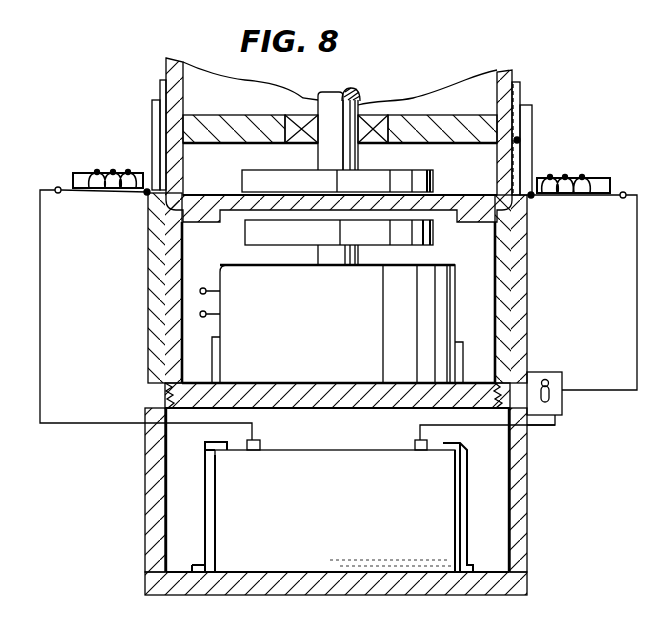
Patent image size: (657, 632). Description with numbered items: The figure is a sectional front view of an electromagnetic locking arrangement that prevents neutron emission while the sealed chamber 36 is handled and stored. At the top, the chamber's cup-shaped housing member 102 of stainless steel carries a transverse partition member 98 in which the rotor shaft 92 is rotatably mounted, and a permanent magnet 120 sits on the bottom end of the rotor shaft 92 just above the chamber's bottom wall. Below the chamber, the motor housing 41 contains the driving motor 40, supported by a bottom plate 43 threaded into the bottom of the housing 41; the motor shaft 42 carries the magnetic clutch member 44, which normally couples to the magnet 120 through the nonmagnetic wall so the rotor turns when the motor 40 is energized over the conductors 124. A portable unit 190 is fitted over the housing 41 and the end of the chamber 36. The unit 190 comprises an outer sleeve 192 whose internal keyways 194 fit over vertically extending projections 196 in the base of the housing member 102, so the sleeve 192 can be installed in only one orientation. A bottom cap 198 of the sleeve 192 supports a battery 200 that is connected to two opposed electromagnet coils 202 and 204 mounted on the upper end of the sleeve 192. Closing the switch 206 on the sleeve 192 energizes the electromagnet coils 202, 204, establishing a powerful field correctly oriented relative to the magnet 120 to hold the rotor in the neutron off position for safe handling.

The sealed chamber 36 is at (512, 72).
The rotor shaft 92 is at (355, 110).
The transverse partition member 98 is at (427, 117).
The permanent magnet 120 is at (425, 181).
The magnetic clutch member 44 is at (433, 235).
The motor shaft 42 is at (360, 257).
The driving motor 40 is at (437, 327).
The motor housing 41 is at (524, 288).
The portable unit 190 is at (368, 410).
The conductors 124 is at (200, 314).
The vertically extending projections 196 is at (161, 80).
The internal keyways 194 is at (157, 128).
The cup-shaped housing member 102 is at (530, 108).
The electromagnet coil 202 is at (112, 192).
The electromagnet coil 204 is at (572, 196).
The switch 206 is at (563, 408).
The bottom plate 43 is at (312, 400).
The battery 200 is at (346, 463).
The outer sleeve 192 is at (522, 513).
The bottom cap 198 is at (312, 596).